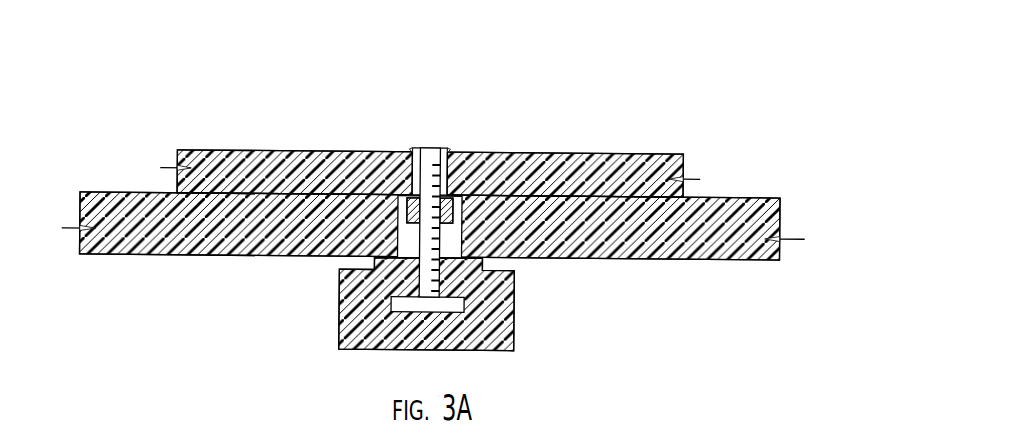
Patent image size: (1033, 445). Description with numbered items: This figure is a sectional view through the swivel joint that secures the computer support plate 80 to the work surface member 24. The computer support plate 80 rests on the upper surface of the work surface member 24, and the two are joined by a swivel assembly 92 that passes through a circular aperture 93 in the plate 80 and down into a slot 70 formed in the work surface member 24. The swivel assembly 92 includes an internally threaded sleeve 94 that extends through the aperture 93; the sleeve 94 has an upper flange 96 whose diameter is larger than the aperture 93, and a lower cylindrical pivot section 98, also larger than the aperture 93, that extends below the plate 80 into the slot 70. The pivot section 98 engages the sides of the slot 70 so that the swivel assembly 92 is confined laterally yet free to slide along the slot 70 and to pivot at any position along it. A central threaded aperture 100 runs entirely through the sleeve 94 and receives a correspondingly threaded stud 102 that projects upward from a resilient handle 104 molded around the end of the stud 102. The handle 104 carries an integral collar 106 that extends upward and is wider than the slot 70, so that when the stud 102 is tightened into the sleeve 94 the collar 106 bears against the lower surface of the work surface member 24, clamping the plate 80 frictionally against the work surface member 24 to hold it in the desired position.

The work surface member 24 is at (708, 263).
The computer support plate 80 is at (621, 150).
The slot 70 is at (458, 230).
The swivel assembly 92 is at (401, 322).
The circular aperture 93 is at (410, 194).
The internally threaded sleeve 94 is at (460, 165).
The upper flange 96 is at (448, 148).
The cylindrical pivot section 98 is at (392, 203).
The central threaded aperture 100 is at (342, 187).
The threaded stud 102 is at (427, 280).
The resilient handle 104 is at (467, 337).
The integral collar 106 is at (483, 262).